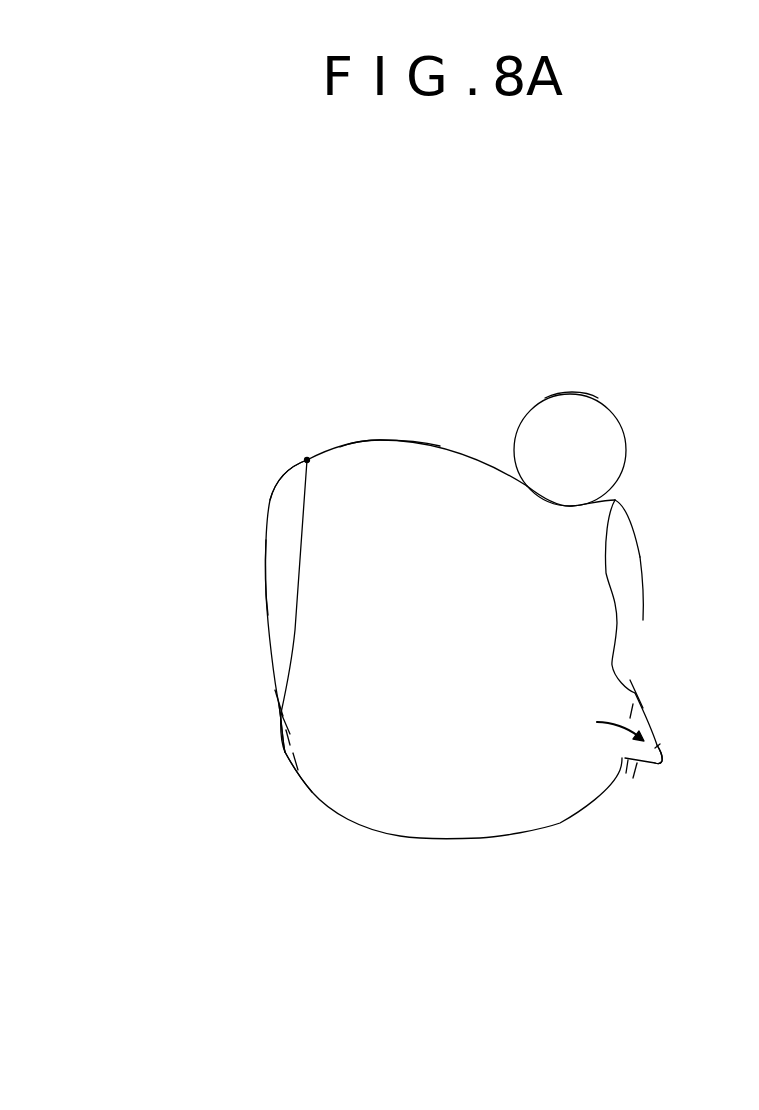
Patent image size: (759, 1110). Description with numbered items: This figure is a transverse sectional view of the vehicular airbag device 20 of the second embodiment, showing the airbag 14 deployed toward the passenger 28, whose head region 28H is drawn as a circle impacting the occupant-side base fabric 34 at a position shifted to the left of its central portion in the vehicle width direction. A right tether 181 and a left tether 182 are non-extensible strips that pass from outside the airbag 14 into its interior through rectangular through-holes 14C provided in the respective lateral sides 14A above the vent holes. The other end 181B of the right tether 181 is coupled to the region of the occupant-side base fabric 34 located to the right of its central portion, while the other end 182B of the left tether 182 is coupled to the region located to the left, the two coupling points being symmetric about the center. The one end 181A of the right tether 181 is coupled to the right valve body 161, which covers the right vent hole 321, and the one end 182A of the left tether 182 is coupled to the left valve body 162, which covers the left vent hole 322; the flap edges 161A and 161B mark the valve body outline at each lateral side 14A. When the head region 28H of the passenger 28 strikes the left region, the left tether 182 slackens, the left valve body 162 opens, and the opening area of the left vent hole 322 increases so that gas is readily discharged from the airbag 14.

The vehicular airbag device 20 is at (352, 368).
The occupant-side base fabric 34 is at (380, 440).
The passenger 28 is at (623, 422).
The head region 28H is at (572, 393).
The airbag 14 is at (275, 480).
The lateral side 14A is at (266, 609).
The through-hole 14C is at (277, 705).
The right tether 181 is at (300, 573).
The one end of right tether 181A is at (278, 726).
The other end of right tether 181B is at (308, 462).
The left tether 182 is at (615, 600).
The one end of left tether 182A is at (655, 766).
The other end of left tether 182B is at (615, 503).
The right valve body 161 is at (276, 752).
The flap inner edge 161A is at (283, 730).
The flap outer edge 161B is at (292, 770).
The left valve body 162 is at (633, 778).
The right vent hole 321 is at (290, 745).
The left vent hole 322 is at (625, 757).